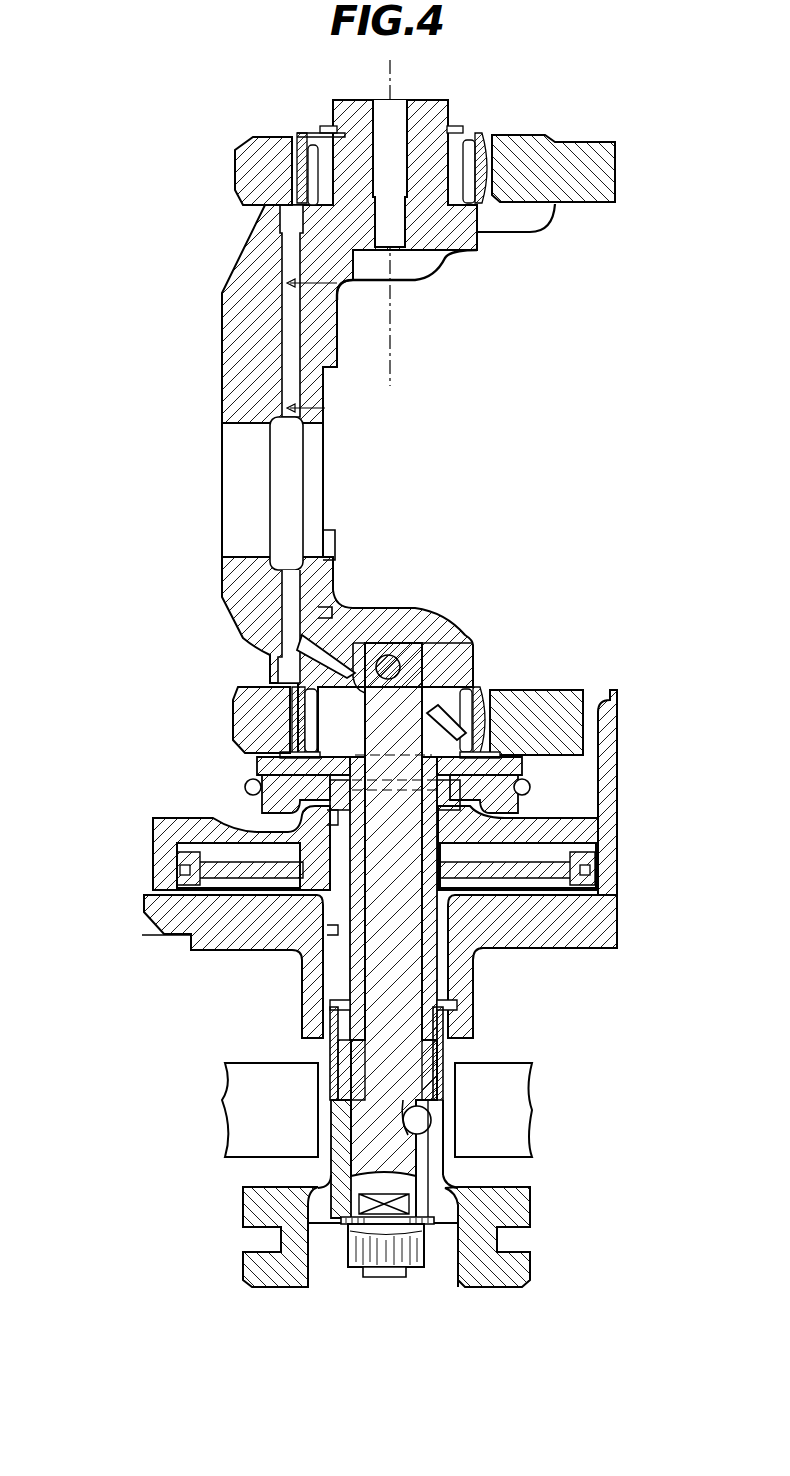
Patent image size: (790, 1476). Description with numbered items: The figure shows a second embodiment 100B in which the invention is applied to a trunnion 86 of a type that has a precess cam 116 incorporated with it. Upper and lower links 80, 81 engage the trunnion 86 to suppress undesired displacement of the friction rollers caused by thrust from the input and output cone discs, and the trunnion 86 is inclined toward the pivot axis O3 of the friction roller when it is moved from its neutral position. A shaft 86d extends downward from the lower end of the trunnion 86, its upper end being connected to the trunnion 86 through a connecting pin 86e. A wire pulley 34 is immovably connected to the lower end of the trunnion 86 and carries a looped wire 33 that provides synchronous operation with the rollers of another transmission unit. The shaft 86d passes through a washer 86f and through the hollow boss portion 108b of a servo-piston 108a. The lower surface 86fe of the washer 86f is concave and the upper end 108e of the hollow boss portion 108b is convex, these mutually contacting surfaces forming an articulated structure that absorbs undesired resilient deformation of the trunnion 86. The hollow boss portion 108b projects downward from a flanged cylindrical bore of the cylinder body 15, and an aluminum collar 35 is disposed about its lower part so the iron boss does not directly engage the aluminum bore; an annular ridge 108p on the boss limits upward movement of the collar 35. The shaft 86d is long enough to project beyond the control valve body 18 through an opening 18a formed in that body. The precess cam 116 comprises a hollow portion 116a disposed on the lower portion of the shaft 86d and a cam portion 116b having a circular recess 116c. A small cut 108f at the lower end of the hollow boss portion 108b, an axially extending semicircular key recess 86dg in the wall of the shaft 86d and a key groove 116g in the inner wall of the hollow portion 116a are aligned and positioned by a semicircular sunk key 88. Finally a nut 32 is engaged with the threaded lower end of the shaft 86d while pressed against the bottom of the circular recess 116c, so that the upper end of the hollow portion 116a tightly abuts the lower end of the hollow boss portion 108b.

The pivot axis O3 is at (393, 80).
The second embodiment 100B is at (660, 102).
The upper link 80 is at (248, 152).
The trunnion 86 is at (248, 283).
The shaft 86d is at (388, 893).
The connecting pin 86e is at (392, 655).
The washer 86f is at (550, 815).
The lower surface of the washer 86fe is at (262, 808).
The semicircular key recess 86dg is at (405, 1100).
The lower link 81 is at (233, 702).
The wire pulley 34 is at (250, 760).
The looped wire 33 is at (247, 785).
The cylinder body 15 is at (173, 917).
The servo-piston 108a is at (556, 858).
The hollow boss portion 108b is at (450, 955).
The upper end of the hollow boss portion 108e is at (462, 755).
The small cut 108f is at (440, 1100).
The annular ridge 108p is at (440, 1002).
The aluminum collar 35 is at (443, 1053).
The sunk key 88 is at (432, 1120).
The control valve body 18 is at (247, 1158).
The opening 18a is at (455, 1152).
The precess cam 116 is at (243, 1262).
The hollow portion 116a is at (440, 1130).
The cam portion 116b is at (517, 1268).
The circular recess 116c is at (460, 1232).
The key groove 116g is at (440, 1198).
The nut 32 is at (350, 1240).